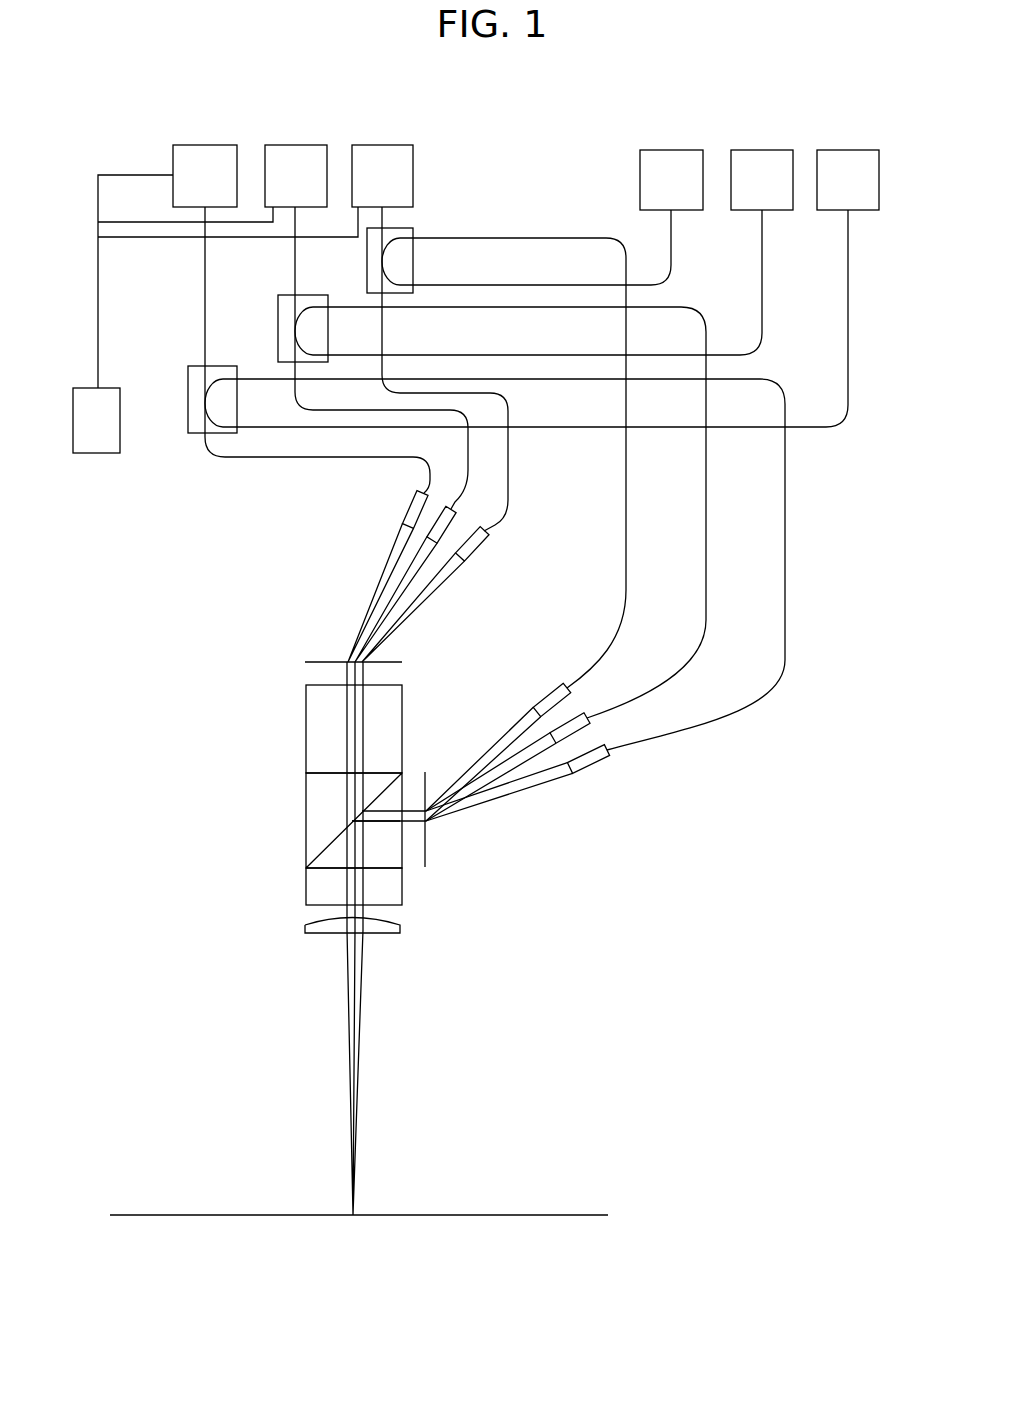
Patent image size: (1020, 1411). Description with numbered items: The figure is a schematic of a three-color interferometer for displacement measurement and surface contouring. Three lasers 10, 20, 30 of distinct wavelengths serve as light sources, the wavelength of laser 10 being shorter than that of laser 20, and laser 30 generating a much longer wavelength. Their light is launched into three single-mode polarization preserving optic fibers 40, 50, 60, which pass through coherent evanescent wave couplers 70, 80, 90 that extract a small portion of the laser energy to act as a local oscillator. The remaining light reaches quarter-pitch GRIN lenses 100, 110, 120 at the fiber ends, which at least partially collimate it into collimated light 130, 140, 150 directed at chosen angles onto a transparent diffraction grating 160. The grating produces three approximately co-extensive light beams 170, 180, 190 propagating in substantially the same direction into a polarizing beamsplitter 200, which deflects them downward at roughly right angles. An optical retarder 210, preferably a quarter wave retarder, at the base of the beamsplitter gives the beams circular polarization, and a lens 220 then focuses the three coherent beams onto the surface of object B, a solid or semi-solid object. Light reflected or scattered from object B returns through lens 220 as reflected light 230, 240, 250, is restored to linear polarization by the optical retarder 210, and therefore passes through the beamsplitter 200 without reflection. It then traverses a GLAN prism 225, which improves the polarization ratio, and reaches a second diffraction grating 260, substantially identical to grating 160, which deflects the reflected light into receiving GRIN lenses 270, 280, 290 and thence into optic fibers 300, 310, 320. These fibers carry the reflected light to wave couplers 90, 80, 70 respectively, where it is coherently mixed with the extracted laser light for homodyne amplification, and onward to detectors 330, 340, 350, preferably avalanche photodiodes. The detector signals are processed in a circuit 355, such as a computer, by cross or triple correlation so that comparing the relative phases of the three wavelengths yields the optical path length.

The laser 10 is at (671, 150).
The laser 20 is at (762, 150).
The laser 30 is at (848, 150).
The optic fiber 40 is at (671, 235).
The optic fiber 50 is at (762, 235).
The optic fiber 60 is at (848, 235).
The wave coupler 70 is at (413, 228).
The wave coupler 80 is at (312, 295).
The wave coupler 90 is at (222, 366).
The GRIN lens 100 is at (545, 690).
The GRIN lens 110 is at (577, 712).
The GRIN lens 120 is at (593, 768).
The collimated light 130 is at (518, 718).
The collimated light 140 is at (522, 800).
The collimated light 150 is at (548, 782).
The diffraction grating 160 is at (428, 785).
The light beam 170 is at (413, 810).
The light beam 180 is at (410, 830).
The light beam 190 is at (427, 850).
The polarizing beamsplitter 200 is at (322, 845).
The optical retarder 210 is at (318, 888).
The lens 220 is at (313, 928).
The GLAN prism 225 is at (390, 690).
The reflected light 230 is at (342, 738).
The reflected light 240 is at (350, 716).
The reflected light 250 is at (355, 698).
The diffraction grating 260 is at (325, 662).
The GRIN lens 270 is at (398, 510).
The GRIN lens 280 is at (440, 502).
The GRIN lens 290 is at (487, 545).
The optic fiber 300 is at (343, 460).
The optic fiber 310 is at (470, 448).
The optic fiber 320 is at (510, 478).
The detector 330 is at (205, 145).
The detector 340 is at (296, 145).
The detector 350 is at (382, 145).
The circuit 355 is at (97, 443).
The object B is at (193, 1213).